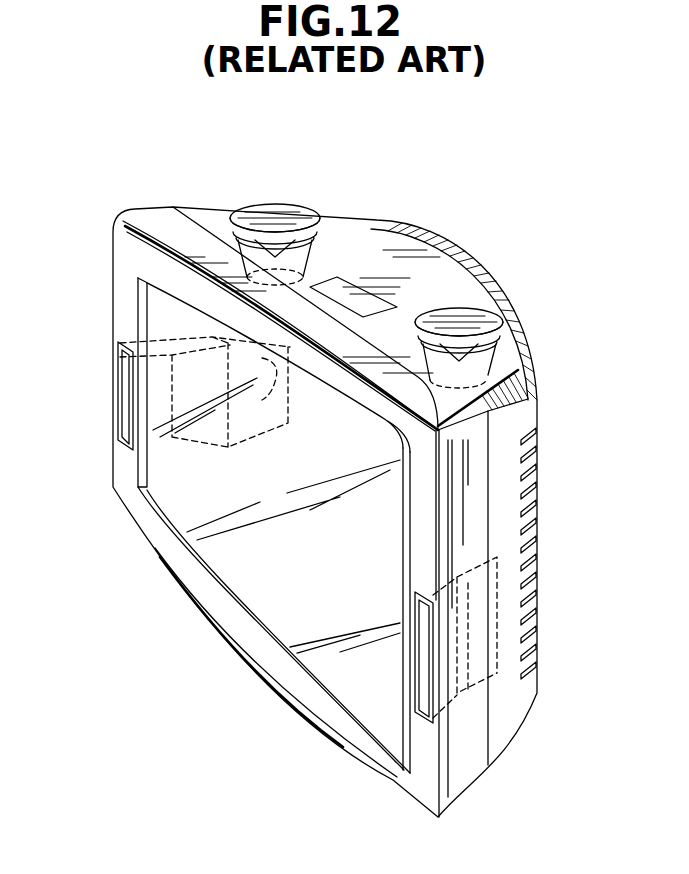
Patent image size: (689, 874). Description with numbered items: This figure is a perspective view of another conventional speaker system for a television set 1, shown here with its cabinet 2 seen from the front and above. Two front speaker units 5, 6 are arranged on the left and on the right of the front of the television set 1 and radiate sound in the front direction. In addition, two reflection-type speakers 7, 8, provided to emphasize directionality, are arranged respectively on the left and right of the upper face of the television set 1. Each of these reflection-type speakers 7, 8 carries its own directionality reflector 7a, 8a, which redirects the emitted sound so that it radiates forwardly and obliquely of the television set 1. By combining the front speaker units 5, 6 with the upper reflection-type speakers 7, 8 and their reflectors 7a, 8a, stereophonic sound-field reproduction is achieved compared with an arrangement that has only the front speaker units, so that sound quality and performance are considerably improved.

The television set 1 is at (403, 200).
The cabinet 2 is at (152, 212).
The front speaker unit 5 is at (122, 386).
The front speaker unit 6 is at (433, 713).
The reflection-type speaker 7 is at (255, 189).
The directionality reflector 7a is at (273, 250).
The reflection-type speaker 8 is at (470, 302).
The directionality reflector 8a is at (500, 343).